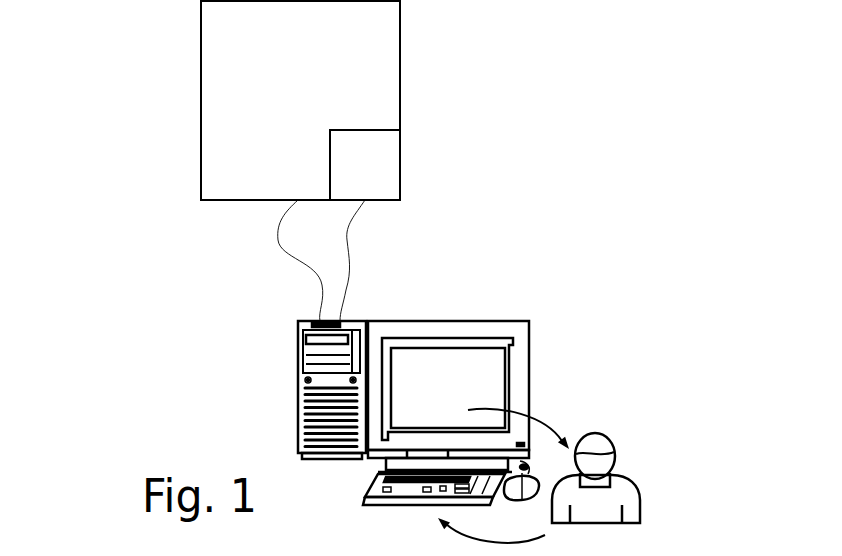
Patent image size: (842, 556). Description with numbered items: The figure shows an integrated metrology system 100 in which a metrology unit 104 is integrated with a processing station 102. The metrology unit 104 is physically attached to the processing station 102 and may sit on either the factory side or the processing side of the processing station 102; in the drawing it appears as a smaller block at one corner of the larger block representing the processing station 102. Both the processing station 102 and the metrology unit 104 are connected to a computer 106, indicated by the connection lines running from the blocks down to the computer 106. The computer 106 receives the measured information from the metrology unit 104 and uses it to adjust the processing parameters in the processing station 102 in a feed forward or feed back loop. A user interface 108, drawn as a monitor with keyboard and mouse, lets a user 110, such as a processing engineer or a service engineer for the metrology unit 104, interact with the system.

The integrated metrology system 100 is at (130, 62).
The processing station 102 is at (400, 67).
The metrology unit 104 is at (400, 165).
The computer 106 is at (298, 381).
The user interface 108 is at (529, 372).
The user 110 is at (640, 507).